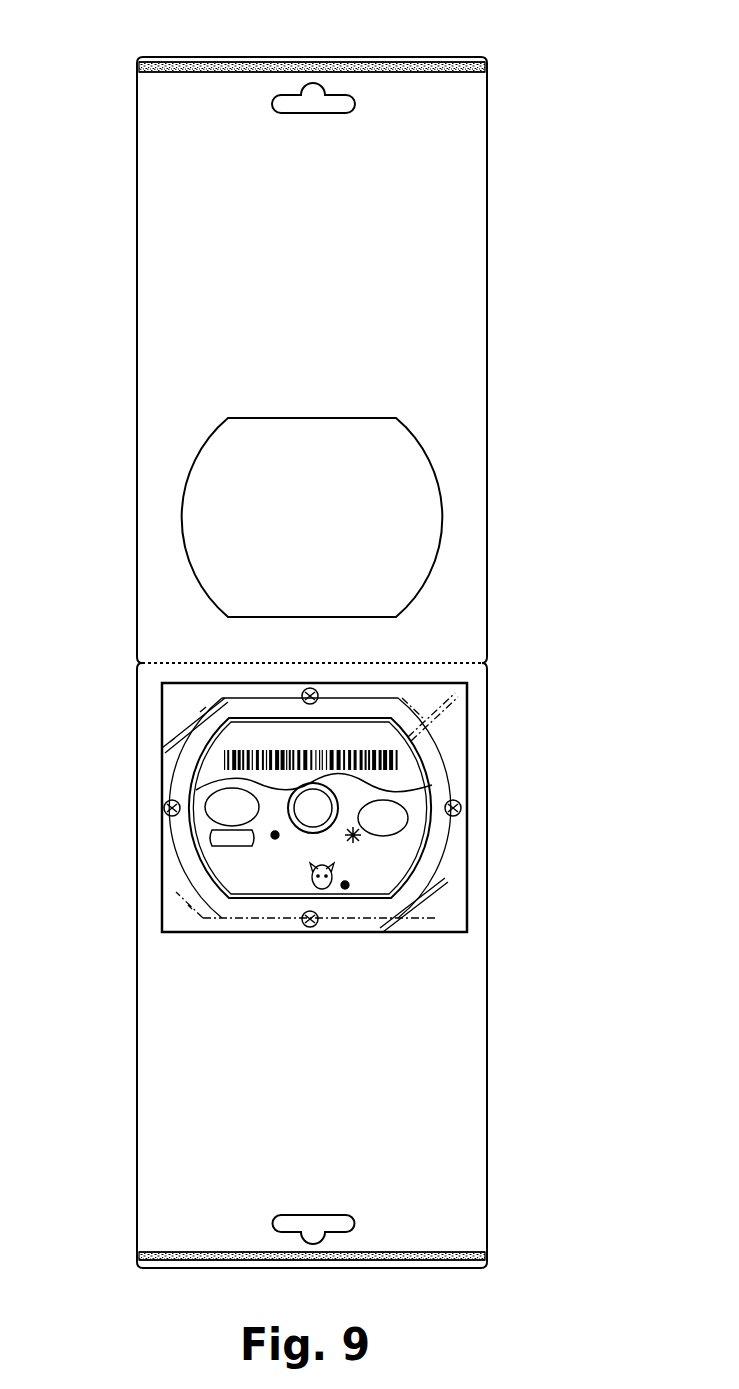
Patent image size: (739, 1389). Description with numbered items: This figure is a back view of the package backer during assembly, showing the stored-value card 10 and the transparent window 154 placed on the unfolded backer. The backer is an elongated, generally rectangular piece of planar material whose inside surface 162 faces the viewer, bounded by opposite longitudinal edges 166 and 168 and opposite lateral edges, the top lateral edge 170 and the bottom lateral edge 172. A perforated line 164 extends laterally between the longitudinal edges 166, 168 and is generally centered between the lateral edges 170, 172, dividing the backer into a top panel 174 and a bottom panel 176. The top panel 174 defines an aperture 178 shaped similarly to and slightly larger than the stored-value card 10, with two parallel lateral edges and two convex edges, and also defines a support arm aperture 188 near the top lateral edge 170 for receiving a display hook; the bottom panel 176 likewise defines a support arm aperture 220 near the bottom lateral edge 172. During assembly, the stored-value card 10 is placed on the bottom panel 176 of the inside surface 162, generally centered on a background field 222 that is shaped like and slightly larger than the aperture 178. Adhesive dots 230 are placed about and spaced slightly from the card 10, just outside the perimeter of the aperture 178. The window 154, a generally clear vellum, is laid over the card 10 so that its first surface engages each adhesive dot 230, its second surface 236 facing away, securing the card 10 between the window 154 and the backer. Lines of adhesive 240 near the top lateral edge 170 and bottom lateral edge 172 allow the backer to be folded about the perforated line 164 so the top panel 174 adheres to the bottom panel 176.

The stored-value card 10 is at (428, 772).
The window 154 is at (453, 748).
The inside surface 162 is at (314, 350).
The perforated line 164 is at (178, 662).
The longitudinal edge 166 is at (488, 228).
The longitudinal edge 168 is at (137, 288).
The top lateral edge 170 is at (432, 56).
The bottom lateral edge 172 is at (178, 1270).
The top panel 174 is at (182, 391).
The bottom panel 176 is at (182, 1126).
The aperture 178 is at (402, 517).
The support arm aperture 188 is at (345, 105).
The support arm aperture 220 is at (340, 1223).
The background field 222 is at (184, 872).
The adhesive dots 230 is at (318, 693).
The second surface 236 is at (177, 705).
The lines of adhesive 240 is at (488, 67).